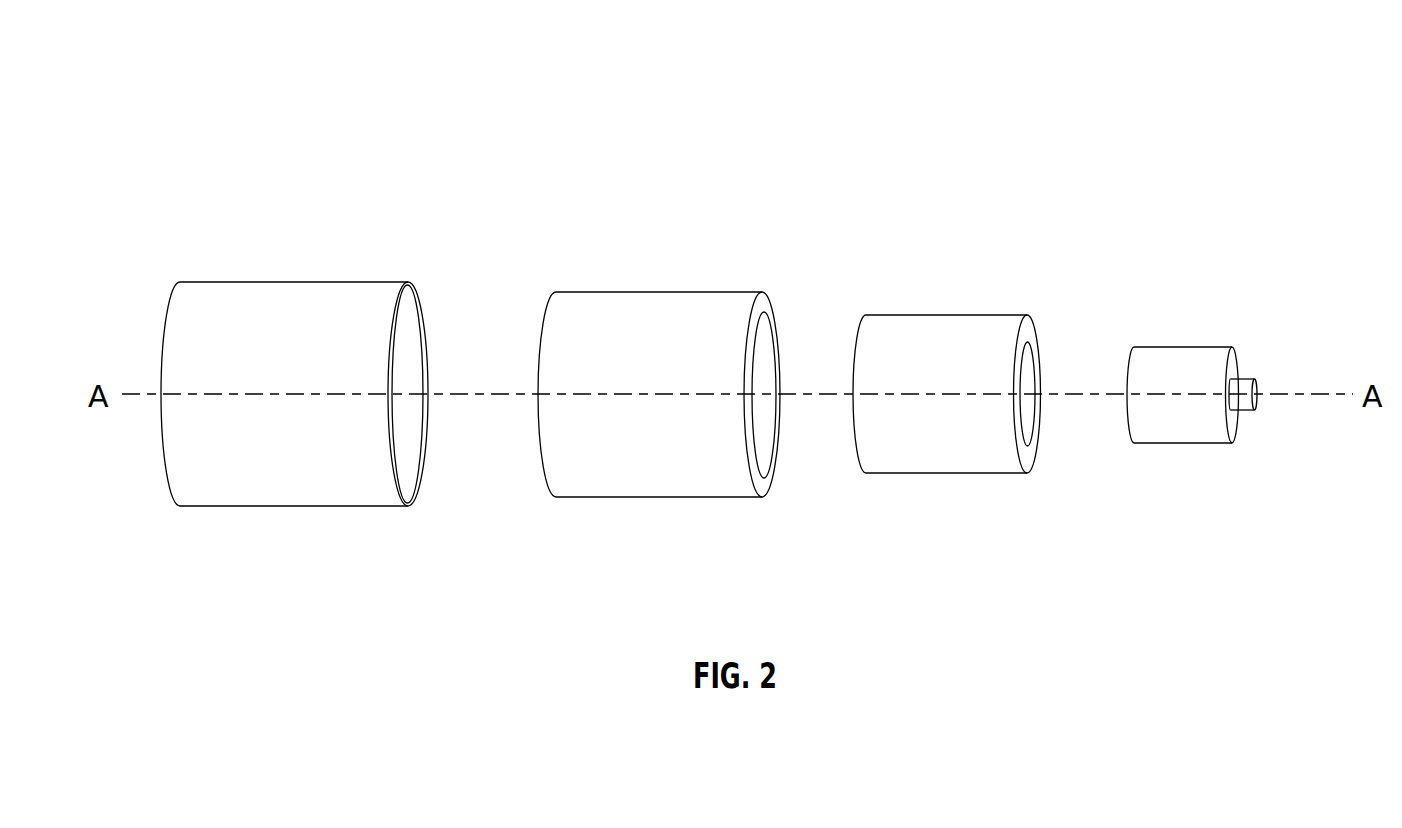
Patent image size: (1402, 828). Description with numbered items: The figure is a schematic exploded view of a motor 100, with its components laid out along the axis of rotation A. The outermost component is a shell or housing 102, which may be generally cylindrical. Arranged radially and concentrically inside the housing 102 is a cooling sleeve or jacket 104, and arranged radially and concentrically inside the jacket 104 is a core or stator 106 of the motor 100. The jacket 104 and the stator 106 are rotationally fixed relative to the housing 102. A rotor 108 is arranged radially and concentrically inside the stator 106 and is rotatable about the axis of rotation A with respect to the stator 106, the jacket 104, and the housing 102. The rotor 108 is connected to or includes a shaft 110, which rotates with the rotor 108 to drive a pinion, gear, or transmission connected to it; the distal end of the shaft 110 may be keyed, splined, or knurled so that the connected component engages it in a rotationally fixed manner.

The motor 100 is at (246, 77).
The housing 102 is at (282, 295).
The cooling jacket 104 is at (660, 303).
The stator 106 is at (947, 327).
The rotor 108 is at (1183, 357).
The shaft 110 is at (1245, 412).